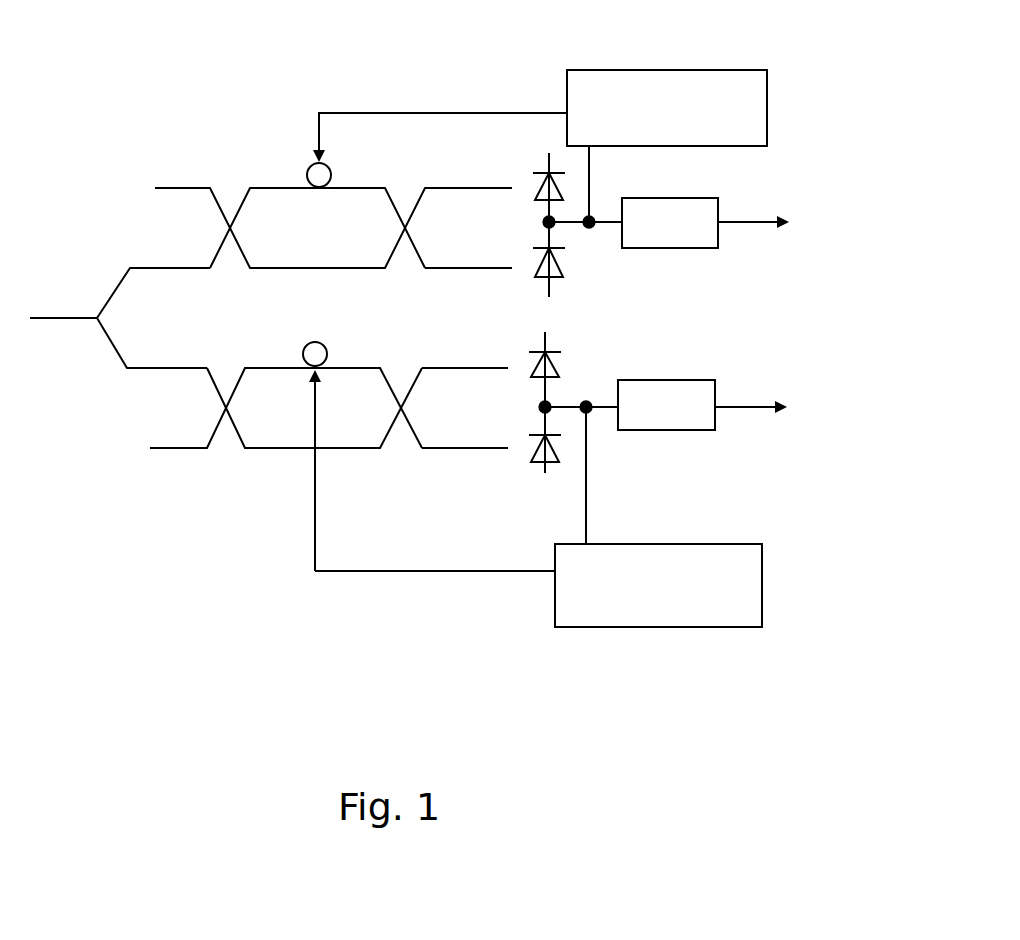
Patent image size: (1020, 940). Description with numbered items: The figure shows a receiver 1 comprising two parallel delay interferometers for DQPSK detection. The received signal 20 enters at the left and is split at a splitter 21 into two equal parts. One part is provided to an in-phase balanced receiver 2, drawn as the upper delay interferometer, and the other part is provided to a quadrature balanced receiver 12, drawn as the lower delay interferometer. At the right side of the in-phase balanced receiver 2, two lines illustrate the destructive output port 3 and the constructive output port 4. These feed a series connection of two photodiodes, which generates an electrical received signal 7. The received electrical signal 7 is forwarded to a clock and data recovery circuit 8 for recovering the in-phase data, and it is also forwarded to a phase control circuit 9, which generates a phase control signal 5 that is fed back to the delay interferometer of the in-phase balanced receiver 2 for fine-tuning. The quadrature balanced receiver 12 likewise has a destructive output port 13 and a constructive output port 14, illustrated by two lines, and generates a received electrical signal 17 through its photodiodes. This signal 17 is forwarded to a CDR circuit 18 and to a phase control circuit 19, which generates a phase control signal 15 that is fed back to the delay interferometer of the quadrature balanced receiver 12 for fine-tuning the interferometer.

The receiver 1 is at (662, 64).
The in-phase balanced receiver 2 is at (291, 168).
The destructive output port 3 is at (437, 188).
The constructive output port 4 is at (437, 268).
The phase control signal 5 is at (448, 113).
The electrical received signal 7 is at (564, 225).
The clock and data recovery circuit 8 is at (718, 198).
The phase control circuit 9 is at (605, 147).
The quadrature balanced receiver 12 is at (212, 472).
The destructive output port 13 is at (450, 368).
The constructive output port 14 is at (435, 448).
The phase control signal 15 is at (325, 572).
The received electrical signal 17 is at (567, 400).
The CDR circuit 18 is at (660, 380).
The phase control circuit 19 is at (625, 627).
The received signal 20 is at (80, 318).
The splitter 21 is at (95, 312).